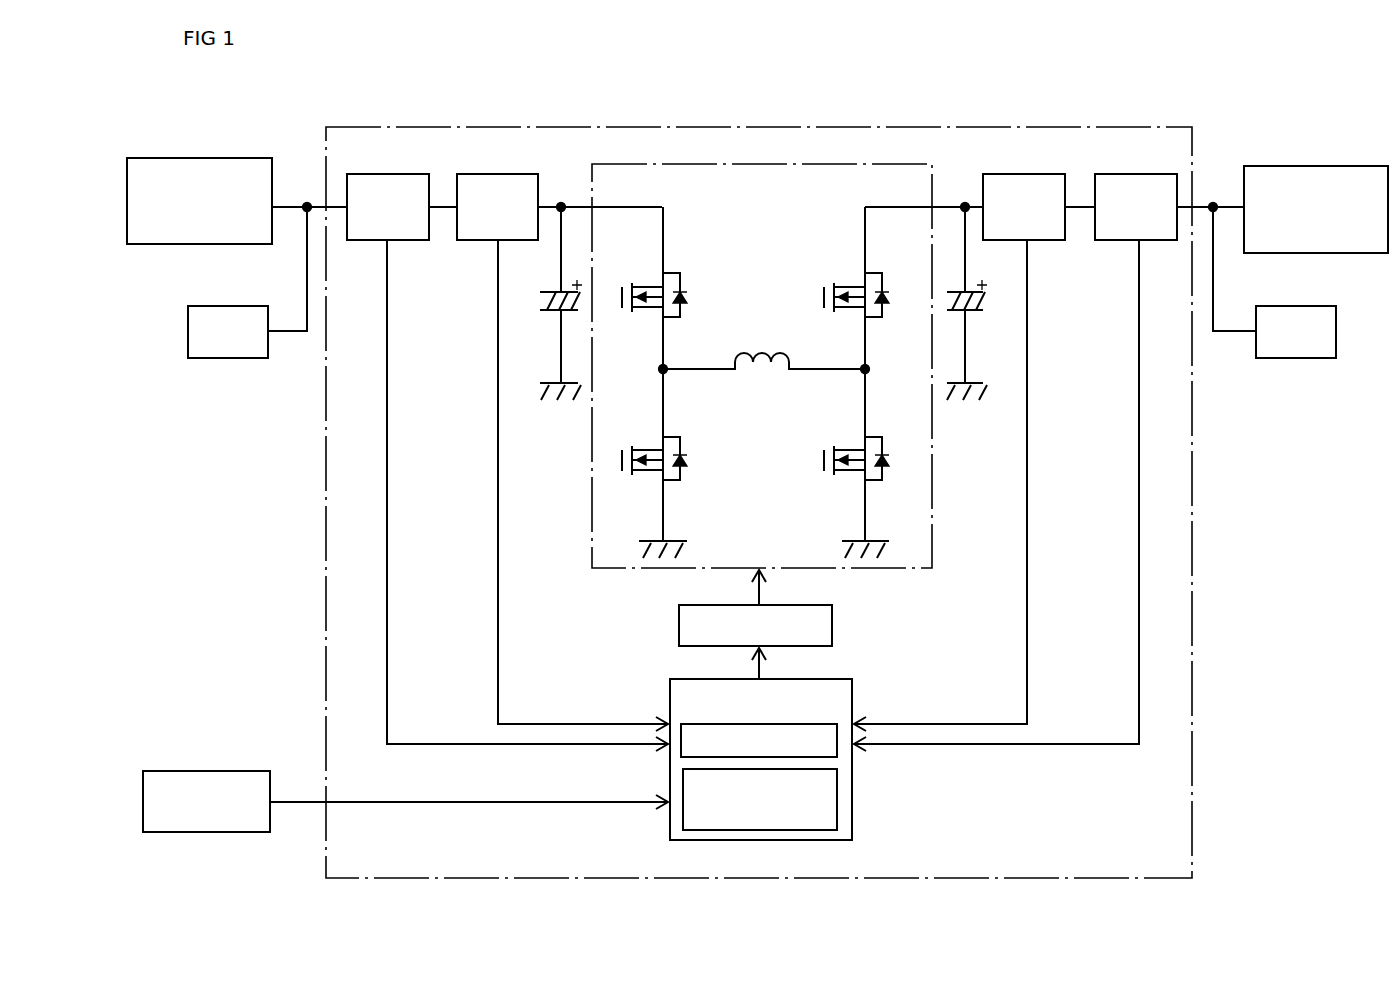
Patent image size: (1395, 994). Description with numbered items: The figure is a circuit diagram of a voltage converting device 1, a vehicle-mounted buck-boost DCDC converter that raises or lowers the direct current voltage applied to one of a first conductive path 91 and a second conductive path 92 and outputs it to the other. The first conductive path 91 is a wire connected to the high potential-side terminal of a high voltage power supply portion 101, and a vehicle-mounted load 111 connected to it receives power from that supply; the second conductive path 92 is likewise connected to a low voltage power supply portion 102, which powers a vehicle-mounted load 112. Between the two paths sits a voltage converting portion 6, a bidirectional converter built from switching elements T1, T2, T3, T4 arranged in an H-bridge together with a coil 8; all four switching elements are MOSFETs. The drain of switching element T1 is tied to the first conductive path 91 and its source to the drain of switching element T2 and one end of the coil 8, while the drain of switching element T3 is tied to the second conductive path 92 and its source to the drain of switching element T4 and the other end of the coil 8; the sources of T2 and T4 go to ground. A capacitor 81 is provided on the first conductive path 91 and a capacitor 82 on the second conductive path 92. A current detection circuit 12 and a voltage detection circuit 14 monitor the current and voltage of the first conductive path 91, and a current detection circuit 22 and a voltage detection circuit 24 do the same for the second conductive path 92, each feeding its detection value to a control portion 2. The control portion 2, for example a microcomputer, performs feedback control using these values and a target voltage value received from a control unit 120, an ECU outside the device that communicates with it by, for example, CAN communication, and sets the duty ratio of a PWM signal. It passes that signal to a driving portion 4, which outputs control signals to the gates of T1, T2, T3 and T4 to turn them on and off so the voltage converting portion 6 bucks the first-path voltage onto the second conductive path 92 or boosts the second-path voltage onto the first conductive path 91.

The voltage converting device 1 is at (1117, 127).
The control portion 2 is at (852, 692).
The driving portion 4 is at (832, 614).
The voltage converting portion 6 is at (830, 164).
The coil 8 is at (755, 348).
The current detection circuit 12 is at (503, 174).
The voltage detection circuit 14 is at (400, 174).
The current detection circuit 22 is at (1024, 174).
The voltage detection circuit 24 is at (1150, 174).
The capacitor 81 is at (553, 313).
The capacitor 82 is at (975, 313).
The first conductive path 91 is at (578, 207).
The second conductive path 92 is at (952, 207).
The high voltage power supply portion 101 is at (193, 244).
The low voltage power supply portion 102 is at (1310, 253).
The vehicle-mounted load 111 is at (217, 358).
The vehicle-mounted load 112 is at (1298, 358).
The control unit 120 is at (197, 832).
The switching element T1 is at (645, 285).
The switching element T2 is at (641, 448).
The switching element T3 is at (873, 280).
The switching element T4 is at (874, 447).